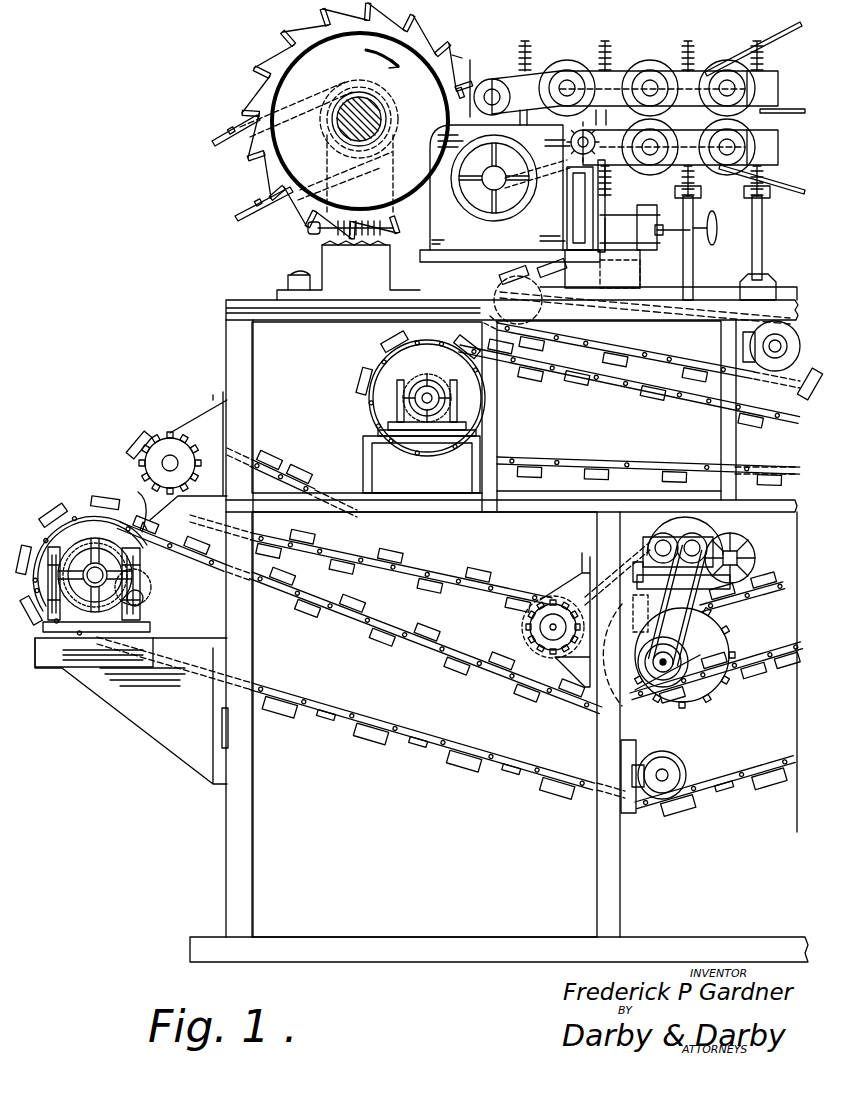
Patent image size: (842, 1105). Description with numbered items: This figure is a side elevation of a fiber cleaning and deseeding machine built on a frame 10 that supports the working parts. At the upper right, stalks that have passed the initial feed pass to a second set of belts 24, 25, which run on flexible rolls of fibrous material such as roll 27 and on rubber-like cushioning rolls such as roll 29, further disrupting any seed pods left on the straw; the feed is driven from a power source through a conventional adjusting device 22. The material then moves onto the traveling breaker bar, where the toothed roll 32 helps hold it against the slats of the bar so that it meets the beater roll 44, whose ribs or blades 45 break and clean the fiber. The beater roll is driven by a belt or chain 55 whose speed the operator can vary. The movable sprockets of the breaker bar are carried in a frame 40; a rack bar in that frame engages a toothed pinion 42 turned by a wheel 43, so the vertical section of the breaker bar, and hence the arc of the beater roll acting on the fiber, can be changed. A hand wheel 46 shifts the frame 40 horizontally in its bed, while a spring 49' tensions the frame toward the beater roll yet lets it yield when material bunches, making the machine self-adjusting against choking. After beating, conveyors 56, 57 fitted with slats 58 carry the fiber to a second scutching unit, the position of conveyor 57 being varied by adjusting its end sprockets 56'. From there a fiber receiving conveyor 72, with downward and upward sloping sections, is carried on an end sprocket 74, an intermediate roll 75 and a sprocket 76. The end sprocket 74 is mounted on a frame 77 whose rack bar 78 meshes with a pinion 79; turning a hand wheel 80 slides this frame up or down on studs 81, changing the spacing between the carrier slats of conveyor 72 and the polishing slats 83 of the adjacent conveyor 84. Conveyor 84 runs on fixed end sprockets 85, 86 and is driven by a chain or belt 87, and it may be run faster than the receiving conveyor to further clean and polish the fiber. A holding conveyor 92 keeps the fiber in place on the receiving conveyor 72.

The frame 10 is at (255, 373).
The conventional adjusting device 22 is at (708, 522).
The belt 24 is at (695, 209).
The belt 25 is at (792, 105).
The flexible roll 27 is at (735, 68).
The cushioning roll 29 is at (758, 183).
The toothed roll 32 is at (573, 125).
The traveling breaker bar frame 40 is at (490, 240).
The toothed pinion 42 is at (134, 503).
The wheel 43 is at (505, 212).
The beater roll 44 is at (394, 104).
The beater ribs or blades 45 is at (468, 56).
The hand wheel 46 is at (718, 240).
The spring 49' is at (353, 281).
The driving belt or chain 55 is at (223, 158).
The conveyor 56 is at (642, 353).
The end sprockets 56' is at (400, 412).
The conveyor 57 is at (553, 369).
The slats 58 is at (700, 383).
The fiber receiving conveyor 72 is at (768, 764).
The end sprocket 74 is at (80, 528).
The intermediate roll 75 is at (684, 771).
The sprocket 76 is at (700, 712).
The frame 77 is at (148, 578).
The rack bar 78 is at (145, 599).
The pinion 79 is at (143, 660).
The hand wheel 80 is at (100, 655).
The studs 81 is at (70, 648).
The polishing slats 83 is at (184, 546).
The polishing conveyor 84 is at (300, 544).
The end sprocket 85 is at (168, 444).
The end sprocket 86 is at (526, 620).
The driving chain or belt 87 is at (582, 570).
The holding conveyor 92 is at (758, 651).